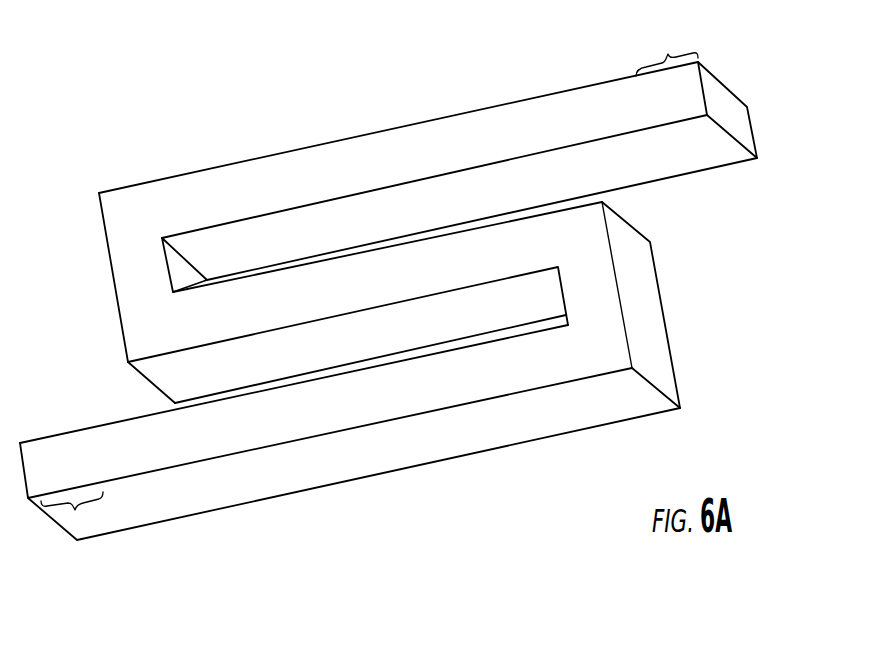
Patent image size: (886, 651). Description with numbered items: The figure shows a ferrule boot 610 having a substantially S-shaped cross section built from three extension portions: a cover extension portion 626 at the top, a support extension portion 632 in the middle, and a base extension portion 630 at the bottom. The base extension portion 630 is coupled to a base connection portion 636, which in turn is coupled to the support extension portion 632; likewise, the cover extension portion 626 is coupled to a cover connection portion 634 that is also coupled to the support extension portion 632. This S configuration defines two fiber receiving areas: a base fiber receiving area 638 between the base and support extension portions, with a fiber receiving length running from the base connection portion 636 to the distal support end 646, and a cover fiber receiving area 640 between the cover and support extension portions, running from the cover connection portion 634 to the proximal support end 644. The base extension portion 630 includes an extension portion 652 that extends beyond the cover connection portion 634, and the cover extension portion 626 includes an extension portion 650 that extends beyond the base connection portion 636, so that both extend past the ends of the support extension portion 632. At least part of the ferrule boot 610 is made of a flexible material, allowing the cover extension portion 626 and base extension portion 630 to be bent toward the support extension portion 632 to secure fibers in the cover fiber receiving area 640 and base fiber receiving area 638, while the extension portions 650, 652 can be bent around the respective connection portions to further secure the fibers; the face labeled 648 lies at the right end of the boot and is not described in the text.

The ferrule boot 610 is at (133, 150).
The cover extension portion 626 is at (339, 131).
The base extension portion 630 is at (516, 467).
The support extension portion 632 is at (222, 380).
The cover connection portion 634 is at (104, 296).
The base connection portion 636 is at (690, 297).
The base fiber receiving area 638 is at (155, 405).
The cover fiber receiving area 640 is at (655, 193).
The proximal support end 644 is at (592, 259).
The distal support end 646 is at (106, 347).
The right end lower face 648 is at (690, 340).
The extension portion 650 is at (665, 52).
The extension portion 652 is at (75, 510).